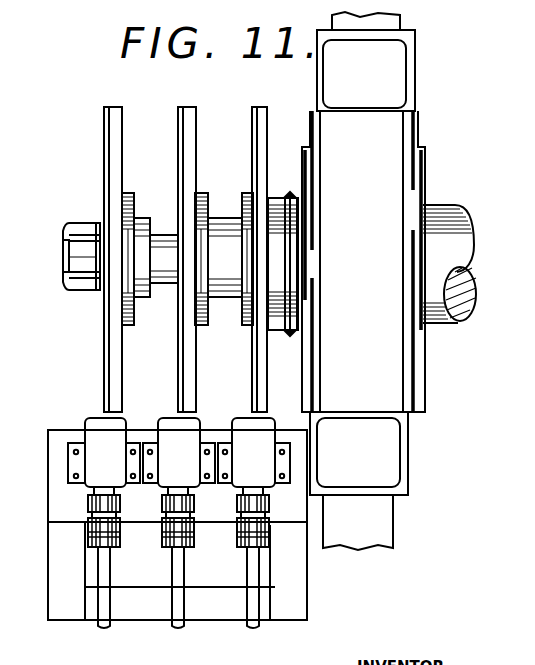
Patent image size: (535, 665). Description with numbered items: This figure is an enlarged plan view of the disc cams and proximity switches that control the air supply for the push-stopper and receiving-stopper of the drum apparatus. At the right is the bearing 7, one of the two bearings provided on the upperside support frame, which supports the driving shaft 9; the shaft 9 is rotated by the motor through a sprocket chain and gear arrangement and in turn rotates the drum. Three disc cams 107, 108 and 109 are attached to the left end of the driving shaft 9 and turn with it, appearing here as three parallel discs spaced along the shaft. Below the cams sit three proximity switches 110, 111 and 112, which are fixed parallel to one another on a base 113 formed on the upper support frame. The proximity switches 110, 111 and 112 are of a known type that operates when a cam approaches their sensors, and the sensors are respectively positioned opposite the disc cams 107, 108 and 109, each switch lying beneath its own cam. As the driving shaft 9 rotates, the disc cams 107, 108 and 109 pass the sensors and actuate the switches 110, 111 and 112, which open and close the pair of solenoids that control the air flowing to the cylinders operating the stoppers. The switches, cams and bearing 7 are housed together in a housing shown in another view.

The bearing 7 is at (372, 262).
The driving shaft 9 is at (440, 205).
The disc cam 107 is at (108, 108).
The disc cam 108 is at (182, 108).
The disc cam 109 is at (256, 108).
The proximity switch 110 is at (113, 467).
The proximity switch 111 is at (186, 467).
The proximity switch 112 is at (262, 467).
The base 113 is at (55, 467).